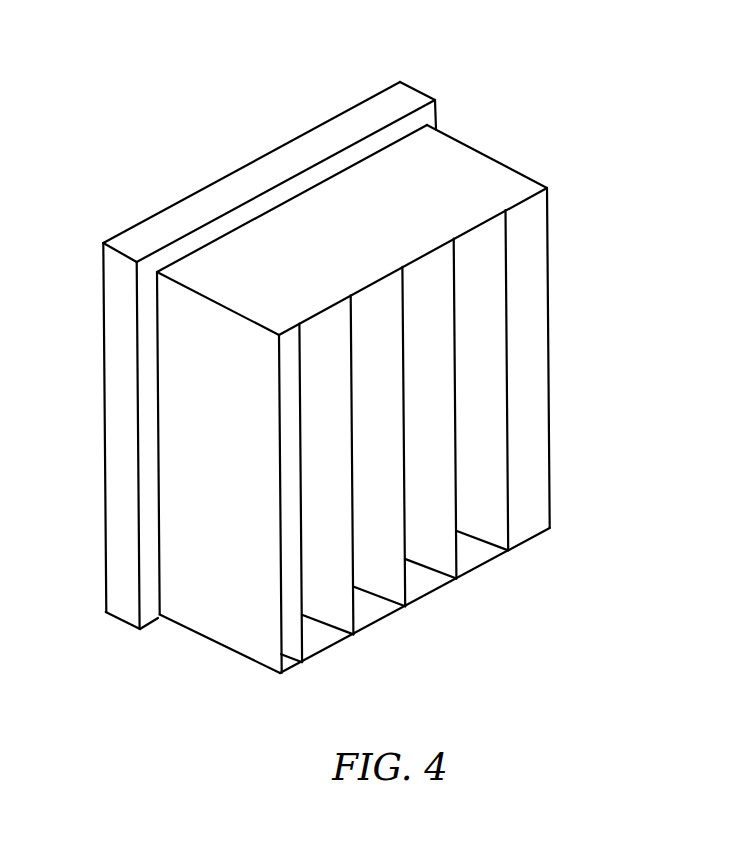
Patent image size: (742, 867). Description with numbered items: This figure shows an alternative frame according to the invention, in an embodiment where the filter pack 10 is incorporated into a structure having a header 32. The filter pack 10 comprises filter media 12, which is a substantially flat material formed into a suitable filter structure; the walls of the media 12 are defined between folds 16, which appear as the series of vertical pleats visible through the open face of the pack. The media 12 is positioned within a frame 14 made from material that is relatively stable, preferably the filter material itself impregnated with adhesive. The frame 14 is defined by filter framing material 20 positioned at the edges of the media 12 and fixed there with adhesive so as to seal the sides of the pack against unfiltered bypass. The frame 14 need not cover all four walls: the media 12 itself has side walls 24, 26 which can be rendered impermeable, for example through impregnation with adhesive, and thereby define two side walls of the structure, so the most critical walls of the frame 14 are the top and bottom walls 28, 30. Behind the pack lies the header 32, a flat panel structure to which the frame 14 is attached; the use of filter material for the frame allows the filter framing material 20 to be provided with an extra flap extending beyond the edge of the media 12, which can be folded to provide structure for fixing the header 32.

The filter pack 10 is at (387, 359).
The filter media 12 is at (404, 360).
The frame 14 is at (462, 130).
The folds 16 is at (456, 492).
The filter framing material 20 is at (504, 166).
The side wall 24 is at (195, 471).
The side wall 26 is at (550, 263).
The top wall 28 is at (321, 243).
The bottom wall 30 is at (427, 595).
The header 32 is at (248, 145).